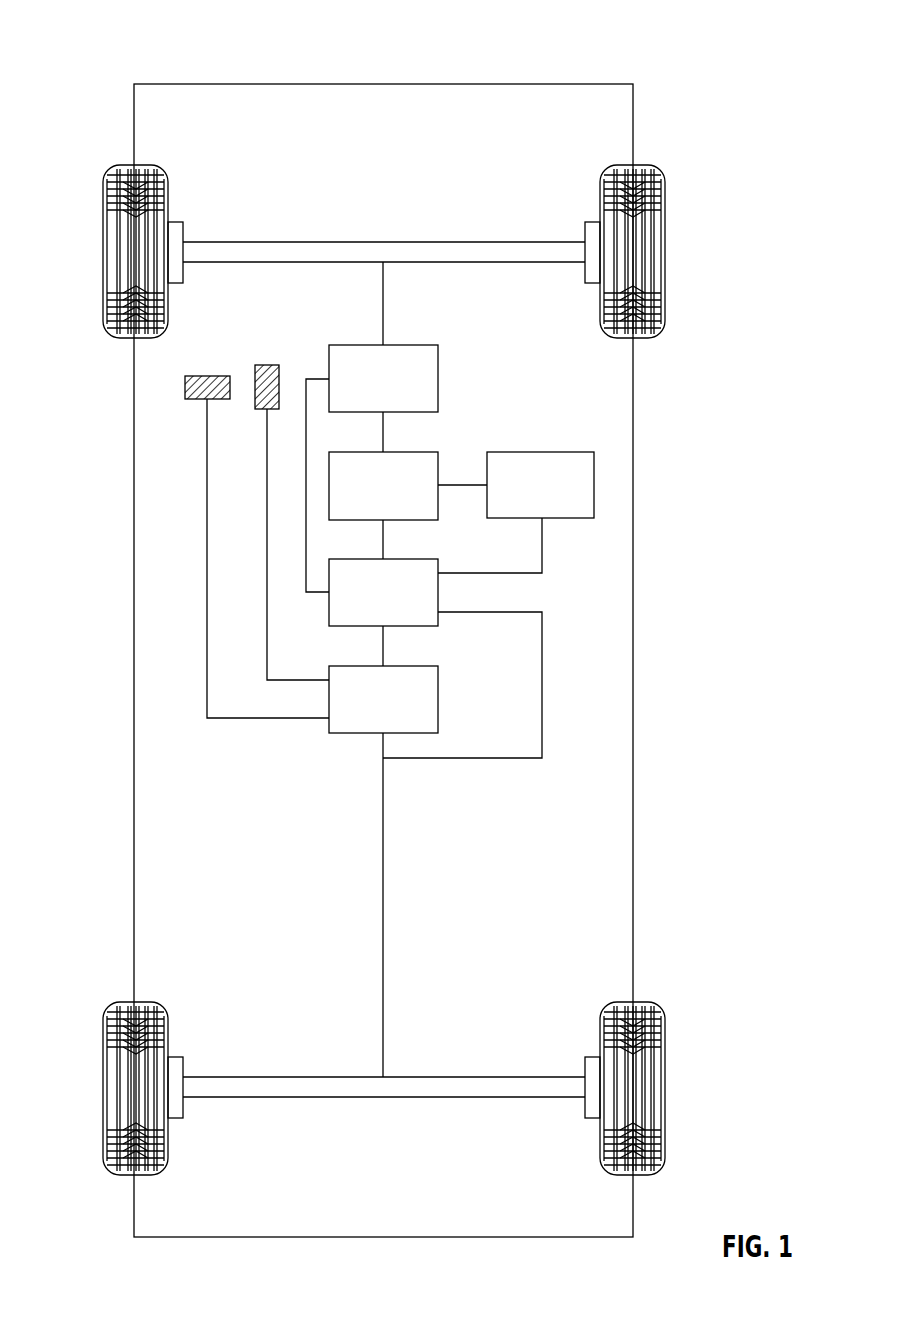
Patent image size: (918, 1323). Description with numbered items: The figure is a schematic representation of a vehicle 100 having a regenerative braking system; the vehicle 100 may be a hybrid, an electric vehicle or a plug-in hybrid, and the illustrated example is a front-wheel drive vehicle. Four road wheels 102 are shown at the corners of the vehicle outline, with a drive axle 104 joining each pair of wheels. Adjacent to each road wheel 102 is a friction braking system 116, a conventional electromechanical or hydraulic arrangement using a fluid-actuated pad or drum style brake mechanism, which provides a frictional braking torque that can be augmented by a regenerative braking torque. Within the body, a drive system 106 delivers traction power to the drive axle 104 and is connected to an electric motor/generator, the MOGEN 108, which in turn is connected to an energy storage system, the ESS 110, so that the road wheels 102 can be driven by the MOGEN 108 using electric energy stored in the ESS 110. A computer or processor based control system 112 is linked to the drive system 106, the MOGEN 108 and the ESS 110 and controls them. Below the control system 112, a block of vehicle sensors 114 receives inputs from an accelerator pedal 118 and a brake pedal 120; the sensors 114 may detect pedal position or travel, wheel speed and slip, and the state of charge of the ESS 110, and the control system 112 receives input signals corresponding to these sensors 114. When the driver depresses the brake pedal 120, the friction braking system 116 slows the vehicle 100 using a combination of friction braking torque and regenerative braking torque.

The vehicle 100 is at (117, 30).
The road wheels 102 is at (103, 252).
The drive axle 104 is at (343, 242).
The drive system 106 is at (394, 345).
The electric motor/generator (MOGEN) 108 is at (394, 452).
The energy storage system (ESS) 110 is at (545, 452).
The control system 112 is at (394, 559).
The vehicle sensors 114 is at (394, 666).
The friction braking system 116 is at (172, 222).
The accelerator pedal 118 is at (268, 365).
The brake pedal 120 is at (207, 376).